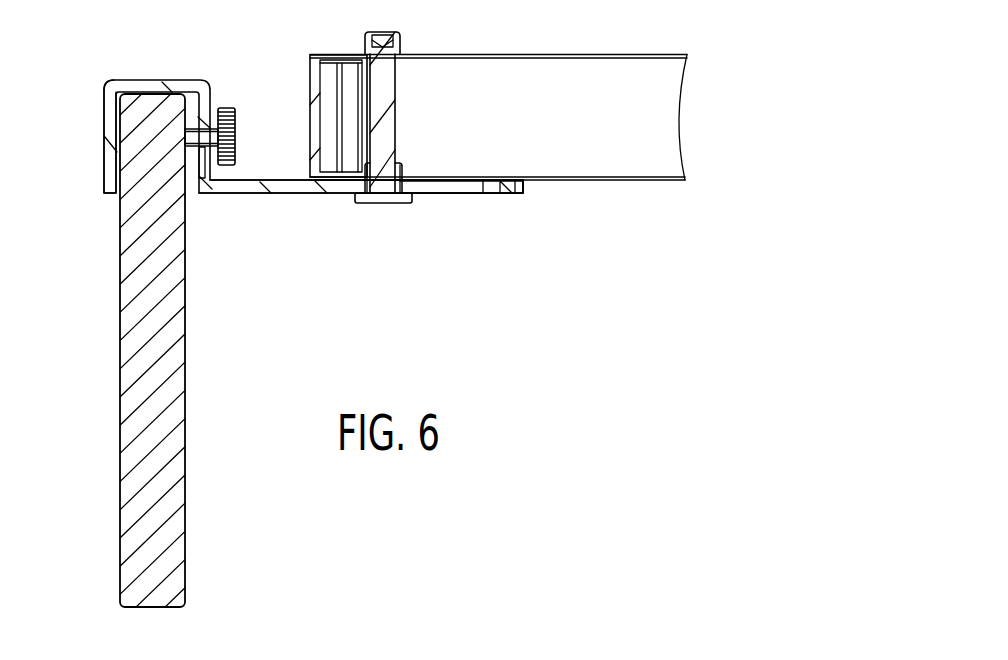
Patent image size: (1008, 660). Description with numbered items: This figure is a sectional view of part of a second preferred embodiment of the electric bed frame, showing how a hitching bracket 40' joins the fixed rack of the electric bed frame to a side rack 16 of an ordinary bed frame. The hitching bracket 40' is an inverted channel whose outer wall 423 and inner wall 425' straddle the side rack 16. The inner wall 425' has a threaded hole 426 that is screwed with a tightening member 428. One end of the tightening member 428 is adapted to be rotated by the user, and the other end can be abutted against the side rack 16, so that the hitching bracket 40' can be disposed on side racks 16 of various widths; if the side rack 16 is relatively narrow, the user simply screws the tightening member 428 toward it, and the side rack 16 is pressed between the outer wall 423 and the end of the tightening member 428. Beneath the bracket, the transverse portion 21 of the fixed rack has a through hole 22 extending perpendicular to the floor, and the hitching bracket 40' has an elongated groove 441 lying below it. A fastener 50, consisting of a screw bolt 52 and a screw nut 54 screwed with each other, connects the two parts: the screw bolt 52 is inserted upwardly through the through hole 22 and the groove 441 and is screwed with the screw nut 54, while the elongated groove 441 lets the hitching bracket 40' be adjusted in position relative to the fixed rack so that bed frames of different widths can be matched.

The side rack 16 is at (148, 245).
The hitching bracket 40' is at (313, 105).
The outer wall 423 is at (110, 125).
The inner wall 425' is at (361, 121).
The threaded hole 426 is at (199, 185).
The tightening member 428 is at (237, 138).
The fastener 50 is at (425, 142).
The screw bolt 52 is at (396, 123).
The screw nut 54 is at (404, 204).
The through hole 22 is at (403, 60).
The groove 441 is at (470, 188).
The transverse portion 21 is at (628, 181).